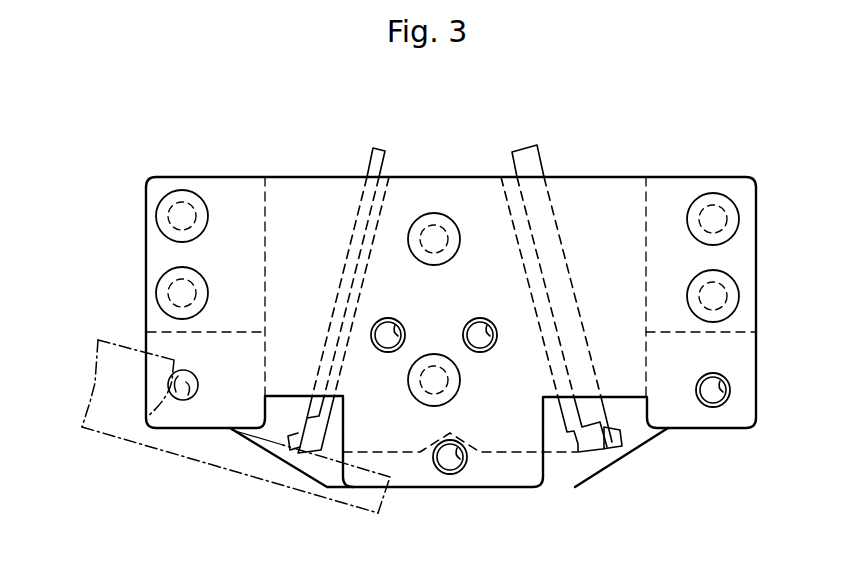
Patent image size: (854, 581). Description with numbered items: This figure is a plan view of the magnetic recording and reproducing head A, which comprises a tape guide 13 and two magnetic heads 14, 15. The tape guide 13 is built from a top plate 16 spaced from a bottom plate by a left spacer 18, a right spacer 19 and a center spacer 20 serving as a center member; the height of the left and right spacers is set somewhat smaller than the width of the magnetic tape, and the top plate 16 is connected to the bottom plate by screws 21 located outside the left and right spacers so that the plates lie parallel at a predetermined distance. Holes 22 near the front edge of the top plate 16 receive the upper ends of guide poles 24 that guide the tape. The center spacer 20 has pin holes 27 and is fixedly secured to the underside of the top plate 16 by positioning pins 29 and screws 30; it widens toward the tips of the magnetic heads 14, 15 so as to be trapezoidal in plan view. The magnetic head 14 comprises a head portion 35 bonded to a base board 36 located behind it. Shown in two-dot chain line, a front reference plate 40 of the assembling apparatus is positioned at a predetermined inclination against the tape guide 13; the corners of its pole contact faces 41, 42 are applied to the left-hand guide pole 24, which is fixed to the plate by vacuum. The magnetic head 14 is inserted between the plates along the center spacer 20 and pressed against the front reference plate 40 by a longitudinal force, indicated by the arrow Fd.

The magnetic recording and reproducing head A is at (172, 149).
The tape guide 13 is at (208, 175).
The magnetic head 14 is at (373, 157).
The magnetic head 15 is at (523, 156).
The top plate 16 is at (556, 183).
The left spacer 18 is at (265, 211).
The right spacer 19 is at (646, 212).
The center spacer 20 is at (550, 297).
The screws 21 is at (162, 213).
The holes 22 is at (467, 462).
The guide poles 24 is at (440, 470).
The pin holes 27 is at (400, 328).
The positioning pins 29 is at (382, 332).
The screws 30 is at (434, 213).
The head portion 35 is at (300, 453).
The base board 36 is at (347, 252).
The front reference plate 40 is at (216, 468).
The pole contact face 41 is at (182, 402).
The pole contact face 42 is at (147, 417).
The actuating force direction Fd is at (388, 128).